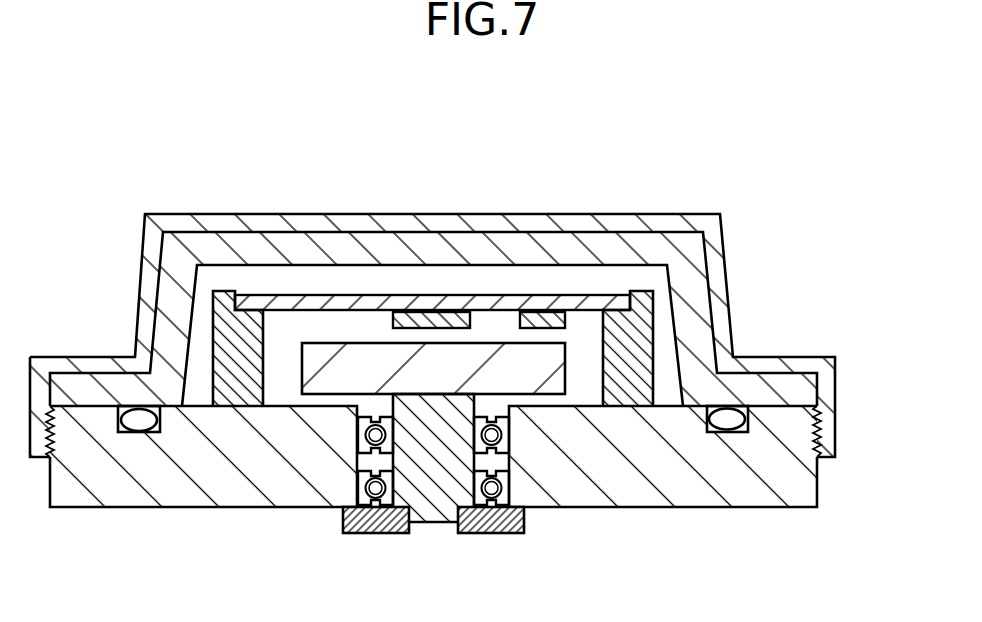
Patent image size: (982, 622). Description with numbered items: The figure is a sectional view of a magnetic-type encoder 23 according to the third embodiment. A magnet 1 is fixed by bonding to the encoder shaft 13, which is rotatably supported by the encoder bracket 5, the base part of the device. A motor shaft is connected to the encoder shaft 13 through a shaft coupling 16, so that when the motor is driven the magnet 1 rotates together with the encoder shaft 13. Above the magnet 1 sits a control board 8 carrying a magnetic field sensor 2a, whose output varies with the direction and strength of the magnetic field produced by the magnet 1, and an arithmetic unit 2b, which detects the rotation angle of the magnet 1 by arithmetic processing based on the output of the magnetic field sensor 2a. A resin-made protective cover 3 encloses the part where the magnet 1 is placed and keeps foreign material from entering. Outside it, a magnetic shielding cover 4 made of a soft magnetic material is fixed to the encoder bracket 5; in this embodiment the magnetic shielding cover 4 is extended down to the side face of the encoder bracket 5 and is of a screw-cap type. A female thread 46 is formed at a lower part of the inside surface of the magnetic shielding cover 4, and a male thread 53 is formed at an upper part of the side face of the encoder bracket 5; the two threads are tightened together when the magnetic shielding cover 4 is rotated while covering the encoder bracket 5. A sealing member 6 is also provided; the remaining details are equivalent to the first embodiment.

The magnet 1 is at (373, 368).
The magnetic field sensor 2a is at (430, 320).
The arithmetic unit 2b is at (541, 320).
The protective cover 3 is at (625, 247).
The magnetic shielding cover 4 is at (672, 223).
The encoder bracket 5 is at (192, 495).
The sealing member 6 is at (727, 425).
The control board 8 is at (486, 304).
The encoder shaft 13 is at (430, 500).
The shaft coupling 16 is at (487, 522).
The encoder 23 is at (139, 178).
The female thread 46 is at (820, 433).
The male thread 53 is at (809, 462).